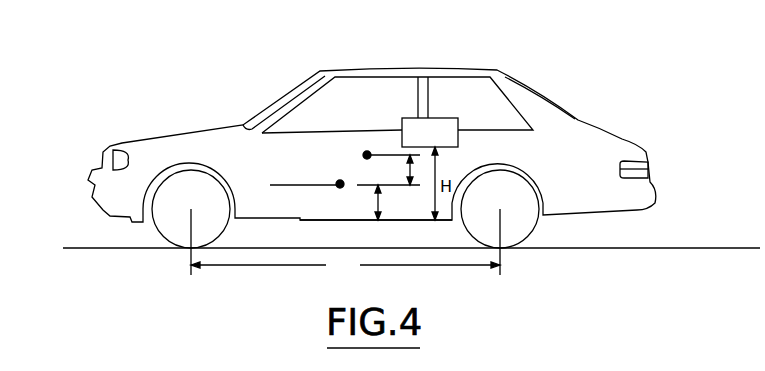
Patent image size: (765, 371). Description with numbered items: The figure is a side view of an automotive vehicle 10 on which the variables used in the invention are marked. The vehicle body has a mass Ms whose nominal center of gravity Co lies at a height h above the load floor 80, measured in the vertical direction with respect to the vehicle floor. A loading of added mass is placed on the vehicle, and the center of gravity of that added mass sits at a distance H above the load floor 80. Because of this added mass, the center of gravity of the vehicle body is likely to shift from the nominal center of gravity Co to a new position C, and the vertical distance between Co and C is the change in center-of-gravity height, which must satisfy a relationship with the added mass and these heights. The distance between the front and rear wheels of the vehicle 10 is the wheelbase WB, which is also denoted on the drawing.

The automotive vehicle 10 is at (482, 67).
The load floor 80 is at (300, 220).
The distance of added mass above load floor H is at (403, 247).
The wheelbase WB is at (345, 242).
The vehicle body mass Ms is at (291, 188).
The nominal center of gravity Co is at (340, 181).
The center of gravity C is at (366, 152).
The height of nominal center of gravity h is at (386, 202).